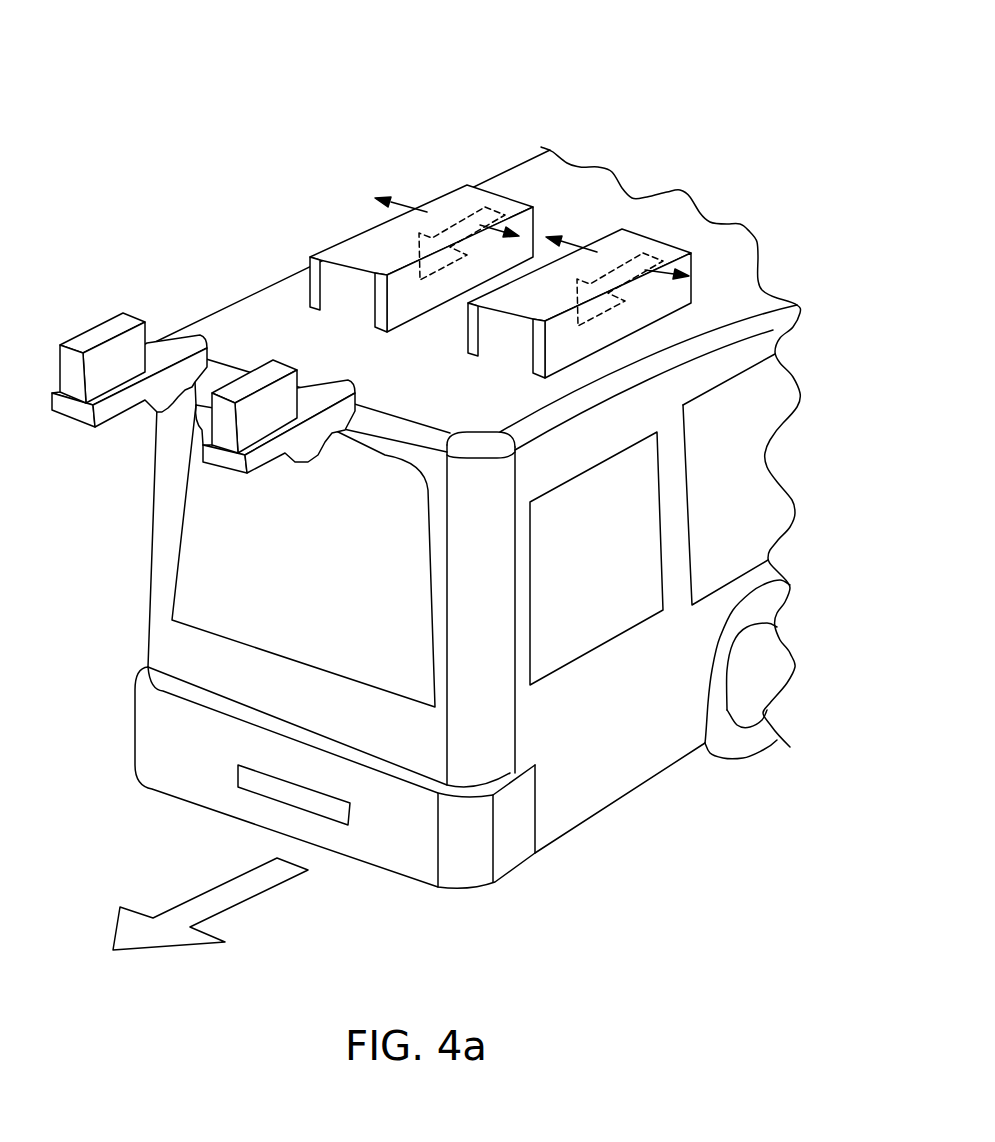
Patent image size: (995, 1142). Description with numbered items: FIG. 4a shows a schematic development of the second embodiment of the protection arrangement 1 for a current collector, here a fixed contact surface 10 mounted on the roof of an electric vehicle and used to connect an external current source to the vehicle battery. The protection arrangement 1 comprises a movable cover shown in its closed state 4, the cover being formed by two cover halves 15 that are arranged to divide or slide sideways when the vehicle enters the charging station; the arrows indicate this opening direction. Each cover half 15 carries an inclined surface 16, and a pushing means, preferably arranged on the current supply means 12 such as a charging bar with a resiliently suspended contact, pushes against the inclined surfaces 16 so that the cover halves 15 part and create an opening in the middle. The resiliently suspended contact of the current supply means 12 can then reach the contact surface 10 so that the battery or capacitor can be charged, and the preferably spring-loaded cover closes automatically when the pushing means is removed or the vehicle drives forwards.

The protection arrangement 1 is at (193, 63).
The closed state 4 is at (433, 241).
The contact surface 10 is at (433, 242).
The current supply means 12 is at (103, 330).
The cover half 15 is at (400, 253).
The inclined surface 16 is at (330, 283).